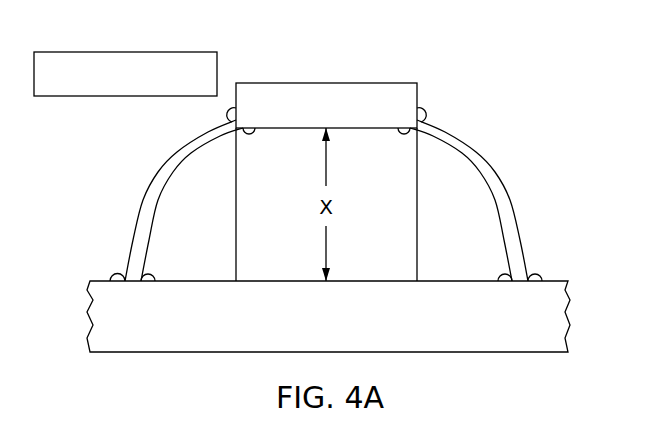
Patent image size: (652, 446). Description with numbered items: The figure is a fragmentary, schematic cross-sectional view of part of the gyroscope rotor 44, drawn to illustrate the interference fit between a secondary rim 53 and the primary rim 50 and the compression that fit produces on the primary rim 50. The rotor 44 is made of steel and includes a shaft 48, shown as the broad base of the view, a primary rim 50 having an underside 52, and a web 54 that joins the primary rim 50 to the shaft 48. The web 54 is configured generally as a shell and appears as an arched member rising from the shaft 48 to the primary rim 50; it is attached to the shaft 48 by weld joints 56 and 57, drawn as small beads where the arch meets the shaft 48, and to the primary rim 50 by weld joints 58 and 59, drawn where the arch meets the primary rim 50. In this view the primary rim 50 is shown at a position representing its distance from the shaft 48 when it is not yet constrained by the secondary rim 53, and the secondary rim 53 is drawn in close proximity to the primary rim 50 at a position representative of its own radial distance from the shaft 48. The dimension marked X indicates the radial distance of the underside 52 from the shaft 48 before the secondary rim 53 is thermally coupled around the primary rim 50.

The rotor 44 is at (138, 163).
The shaft 48 is at (175, 352).
The primary rim 50 is at (357, 83).
The underside 52 is at (298, 128).
The secondary rim 53 is at (120, 52).
The web 54 is at (143, 198).
The weld joint 56 is at (503, 272).
The weld joint 57 is at (113, 272).
The weld joint 58 is at (436, 113).
The weld joint 59 is at (224, 114).